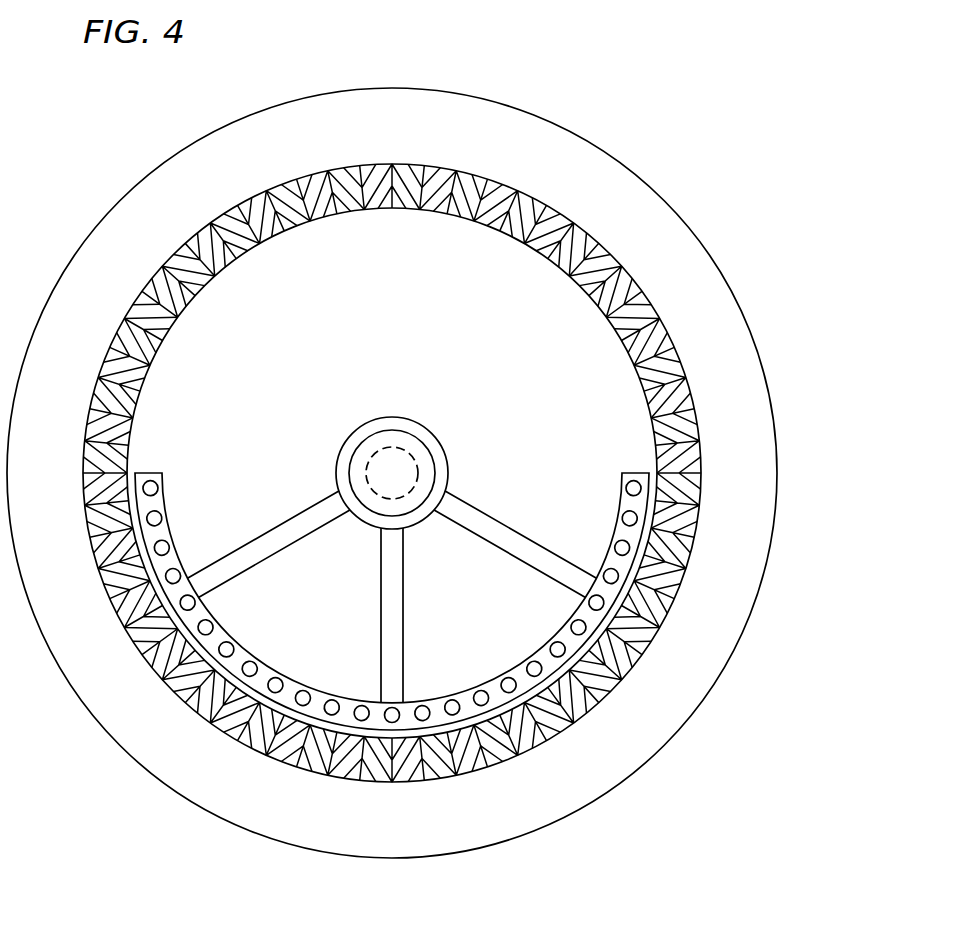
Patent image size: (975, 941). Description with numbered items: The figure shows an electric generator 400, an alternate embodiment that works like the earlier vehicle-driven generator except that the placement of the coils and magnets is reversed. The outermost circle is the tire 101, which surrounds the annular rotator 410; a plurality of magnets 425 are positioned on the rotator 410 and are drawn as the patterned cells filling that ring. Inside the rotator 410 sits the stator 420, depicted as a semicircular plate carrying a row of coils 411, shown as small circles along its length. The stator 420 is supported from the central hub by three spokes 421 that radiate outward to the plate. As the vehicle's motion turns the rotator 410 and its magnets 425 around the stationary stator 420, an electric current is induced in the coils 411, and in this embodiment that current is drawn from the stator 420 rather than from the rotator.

The electric generator 400 is at (210, 108).
The tire 101 is at (593, 153).
The rotator 410 is at (642, 260).
The magnets 425 is at (670, 332).
The stator 420 is at (630, 458).
The coils 411 is at (641, 487).
The spokes 421 is at (300, 515).